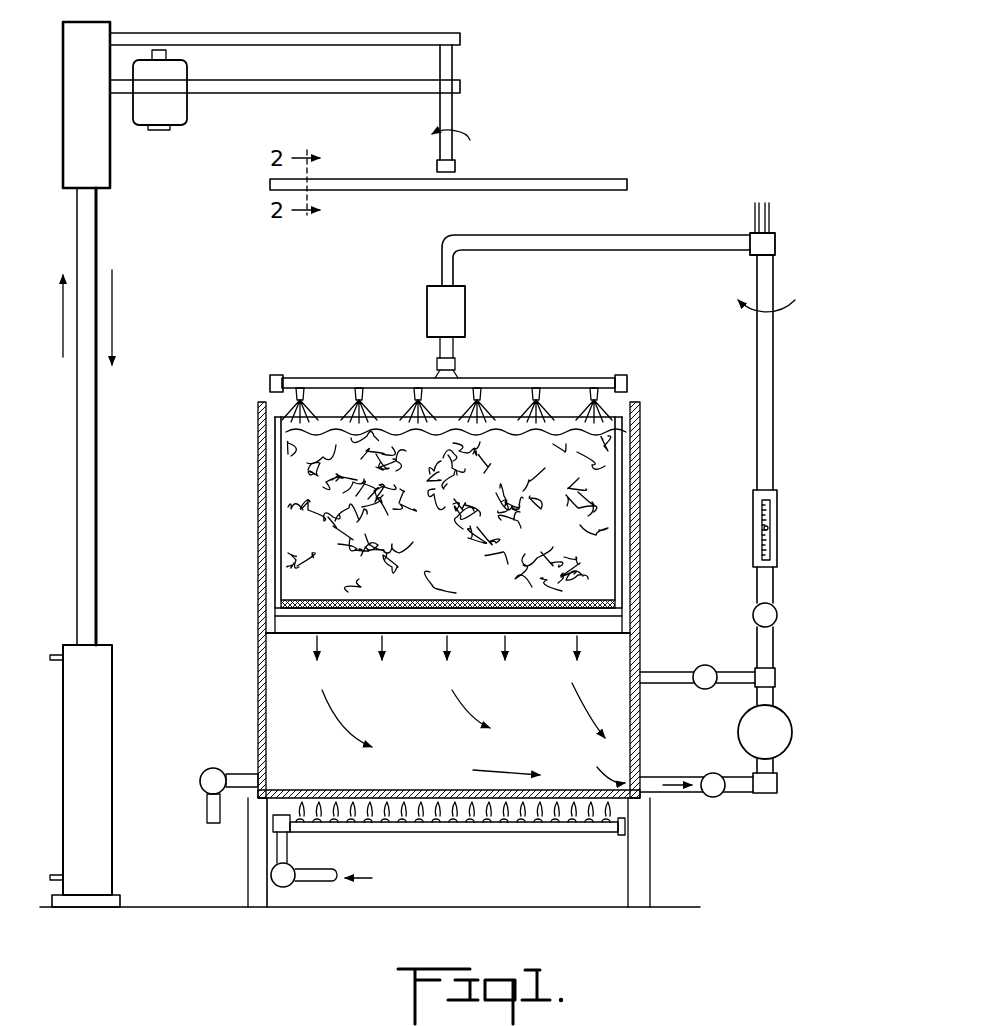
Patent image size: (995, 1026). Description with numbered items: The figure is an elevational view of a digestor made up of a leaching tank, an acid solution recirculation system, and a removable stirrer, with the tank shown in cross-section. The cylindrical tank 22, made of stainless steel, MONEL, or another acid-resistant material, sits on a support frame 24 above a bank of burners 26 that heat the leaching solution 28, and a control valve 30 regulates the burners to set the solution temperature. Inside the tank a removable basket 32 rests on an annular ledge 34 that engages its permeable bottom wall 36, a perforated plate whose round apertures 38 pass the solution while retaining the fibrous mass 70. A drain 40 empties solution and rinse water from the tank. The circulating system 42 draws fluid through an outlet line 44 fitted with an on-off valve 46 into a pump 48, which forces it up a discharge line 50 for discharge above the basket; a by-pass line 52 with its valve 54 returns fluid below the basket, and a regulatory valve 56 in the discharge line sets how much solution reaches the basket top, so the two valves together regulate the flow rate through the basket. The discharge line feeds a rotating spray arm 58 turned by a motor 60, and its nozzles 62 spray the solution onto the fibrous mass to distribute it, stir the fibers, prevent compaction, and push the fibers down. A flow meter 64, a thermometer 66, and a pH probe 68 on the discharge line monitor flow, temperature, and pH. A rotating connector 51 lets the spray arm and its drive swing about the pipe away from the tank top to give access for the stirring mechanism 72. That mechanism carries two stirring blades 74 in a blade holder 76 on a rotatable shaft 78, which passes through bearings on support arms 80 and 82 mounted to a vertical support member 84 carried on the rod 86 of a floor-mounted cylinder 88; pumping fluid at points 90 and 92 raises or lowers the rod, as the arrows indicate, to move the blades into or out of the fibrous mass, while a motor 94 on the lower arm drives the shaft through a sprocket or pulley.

The cylindrical tank 22 is at (258, 687).
The support frame 24 is at (248, 879).
The bank of burners 26 is at (438, 833).
The leaching solution 28 is at (431, 731).
The control valve 30 is at (292, 872).
The basket 32 is at (622, 490).
The annular ledge 34 is at (625, 614).
The permeable bottom wall 36 is at (598, 600).
The round apertures 38 is at (316, 608).
The drain 40 is at (207, 807).
The circulating system 42 is at (820, 460).
The outlet line 44 is at (668, 794).
The on-off valve 46 is at (712, 798).
The pump 48 is at (788, 736).
The discharge line 50 is at (774, 331).
The rotating connector 51 is at (782, 244).
The by-pass line 52 is at (668, 680).
The by-pass valve 54 is at (700, 690).
The regulatory valve 56 is at (777, 616).
The rotating spray arm 58 is at (503, 384).
The motor 60 is at (455, 314).
The nozzles 62 is at (302, 386).
The flow meter 64 is at (770, 520).
The thermometer 66 is at (755, 206).
The pH probe 68 is at (768, 208).
The fibrous mass 70 is at (300, 492).
The stirring mechanism 72 is at (60, 345).
The stirring blades 74 is at (365, 185).
The blade holder 76 is at (456, 166).
The rotatable shaft 78 is at (453, 122).
The support arm 80 is at (297, 94).
The support arm 82 is at (340, 38).
The vertical support member 84 is at (102, 165).
The rod 86 is at (97, 229).
The cylinder 88 is at (78, 753).
The fluid point 90 is at (60, 876).
The fluid point 92 is at (60, 656).
The motor 94 is at (188, 118).